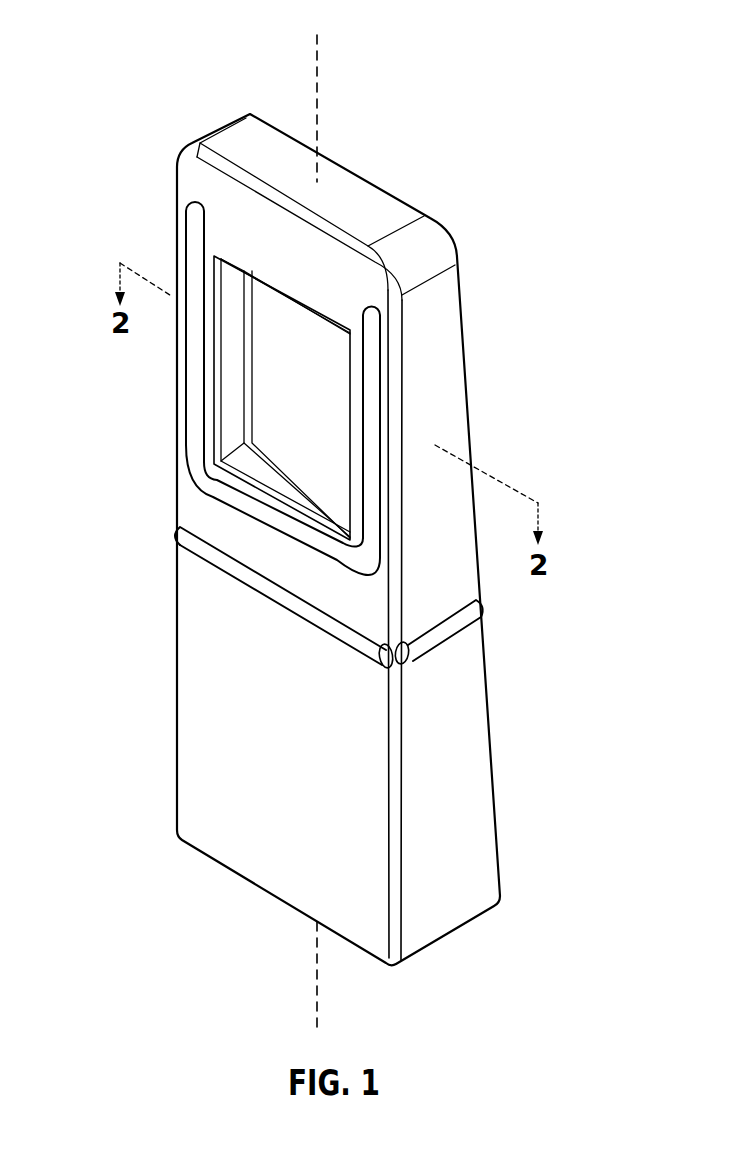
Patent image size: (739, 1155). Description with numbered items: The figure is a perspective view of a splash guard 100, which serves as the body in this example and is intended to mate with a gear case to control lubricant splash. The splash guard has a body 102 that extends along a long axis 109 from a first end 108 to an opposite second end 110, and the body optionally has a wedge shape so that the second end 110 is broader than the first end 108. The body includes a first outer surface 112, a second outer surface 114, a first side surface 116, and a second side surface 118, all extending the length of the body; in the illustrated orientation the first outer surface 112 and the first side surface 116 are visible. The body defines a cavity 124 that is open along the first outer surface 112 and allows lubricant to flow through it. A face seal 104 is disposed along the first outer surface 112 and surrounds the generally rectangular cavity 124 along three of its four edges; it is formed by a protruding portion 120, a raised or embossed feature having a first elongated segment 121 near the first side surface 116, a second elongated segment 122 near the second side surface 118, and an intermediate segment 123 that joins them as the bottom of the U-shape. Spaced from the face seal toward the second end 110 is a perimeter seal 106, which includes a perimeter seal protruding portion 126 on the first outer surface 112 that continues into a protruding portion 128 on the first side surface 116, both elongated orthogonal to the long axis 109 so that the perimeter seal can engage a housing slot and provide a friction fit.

The splash guard 100 is at (153, 45).
The body 102 is at (221, 185).
The face seal 104 is at (354, 316).
The perimeter seal 106 is at (196, 567).
The first end 108 is at (395, 210).
The long axis 109 is at (316, 78).
The second end 110 is at (428, 967).
The first outer surface 112 is at (238, 735).
The second outer surface 114 is at (462, 369).
The first side surface 116 is at (437, 418).
The second side surface 118 is at (180, 660).
The protruding portion 120 is at (190, 398).
The first elongated segment 121 is at (372, 340).
The second elongated segment 122 is at (195, 238).
The intermediate segment 123 is at (248, 513).
The cavity 124 is at (239, 259).
The perimeter seal protruding portion 126 is at (346, 637).
The protruding portion 128 is at (440, 632).